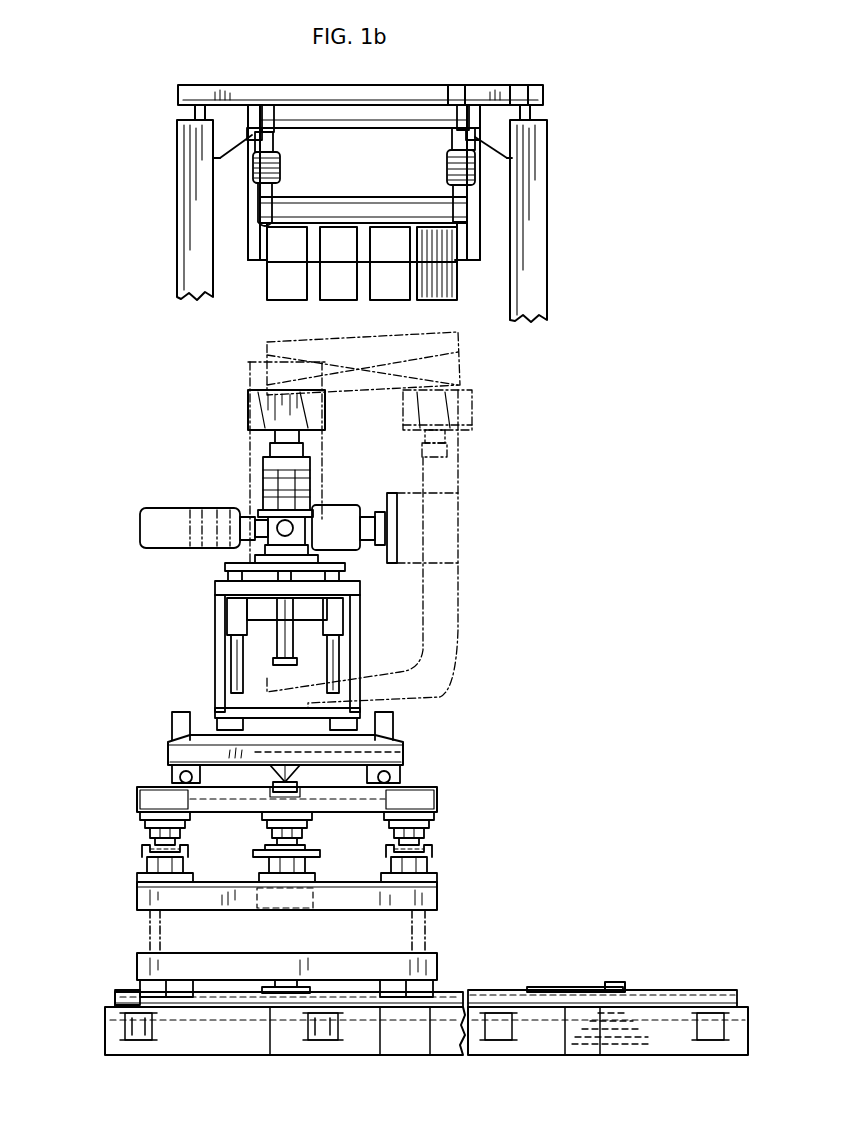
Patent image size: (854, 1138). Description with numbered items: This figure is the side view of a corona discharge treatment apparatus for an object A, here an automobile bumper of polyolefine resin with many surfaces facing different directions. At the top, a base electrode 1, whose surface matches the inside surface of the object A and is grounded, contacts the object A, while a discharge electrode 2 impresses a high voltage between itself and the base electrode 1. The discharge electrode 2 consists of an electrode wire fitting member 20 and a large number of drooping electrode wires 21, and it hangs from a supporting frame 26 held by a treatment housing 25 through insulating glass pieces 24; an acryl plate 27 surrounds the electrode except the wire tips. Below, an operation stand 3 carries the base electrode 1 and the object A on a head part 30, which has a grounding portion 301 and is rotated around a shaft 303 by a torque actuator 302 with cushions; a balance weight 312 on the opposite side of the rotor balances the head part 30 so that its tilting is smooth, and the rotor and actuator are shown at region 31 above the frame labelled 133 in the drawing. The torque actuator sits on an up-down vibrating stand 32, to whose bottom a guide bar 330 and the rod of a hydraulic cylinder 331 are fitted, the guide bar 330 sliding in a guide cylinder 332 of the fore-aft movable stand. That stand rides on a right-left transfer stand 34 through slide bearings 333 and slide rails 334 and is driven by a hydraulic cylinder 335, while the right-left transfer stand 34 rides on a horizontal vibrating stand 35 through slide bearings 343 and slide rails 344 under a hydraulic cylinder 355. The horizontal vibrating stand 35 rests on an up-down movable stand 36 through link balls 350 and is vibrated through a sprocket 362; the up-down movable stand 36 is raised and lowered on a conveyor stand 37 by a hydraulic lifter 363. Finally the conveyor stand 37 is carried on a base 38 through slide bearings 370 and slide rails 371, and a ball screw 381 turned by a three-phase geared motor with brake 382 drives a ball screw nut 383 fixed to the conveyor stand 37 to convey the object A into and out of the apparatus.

The base electrode 1 is at (248, 393).
The discharge electrode 2 is at (462, 280).
The electrode wire fitting member 20 is at (320, 220).
The electrode wires 21 is at (443, 297).
The insulating glass pieces 24 is at (447, 167).
The treatment housing 25 is at (530, 233).
The supporting frame 26 is at (453, 133).
The acryl plate 27 is at (243, 250).
The operation stand 3 is at (213, 682).
The head part 30 is at (267, 437).
The grounding portion 301 is at (247, 405).
The torque actuator with cushions 302 is at (263, 495).
The shaft 303 is at (270, 442).
The rotary shaft unit 31 is at (267, 537).
The balance weight 312 is at (152, 548).
The up-down vibrating stand 32 is at (345, 565).
The guide frame 133 is at (343, 650).
The guide bar 330 is at (228, 642).
The hydraulic cylinder 331 is at (273, 645).
The guide cylinder 332 is at (353, 604).
The slide bearings 333 is at (383, 726).
The slide rails 334 is at (212, 723).
The hydraulic cylinder 335 is at (427, 745).
The right-left transfer stand 34 is at (168, 747).
The slide bearings 343 is at (410, 772).
The slide rails 344 is at (400, 780).
The horizontal vibrating stand 35 is at (438, 810).
The link balls 350 is at (430, 852).
The hydraulic cylinder 355 is at (300, 782).
The up-down movable stand 36 is at (440, 895).
The sprocket 362 is at (313, 852).
The hydraulic lifter 363 is at (423, 930).
The conveyor stand 37 is at (443, 955).
The slide bearings 370 is at (143, 990).
The slide rails 371 is at (110, 993).
The base 38 is at (208, 1040).
The ball screw 381 is at (447, 983).
The three-phase geared motor with brake 382 is at (595, 987).
The ball screw nut 383 is at (287, 985).
The object A is at (248, 368).